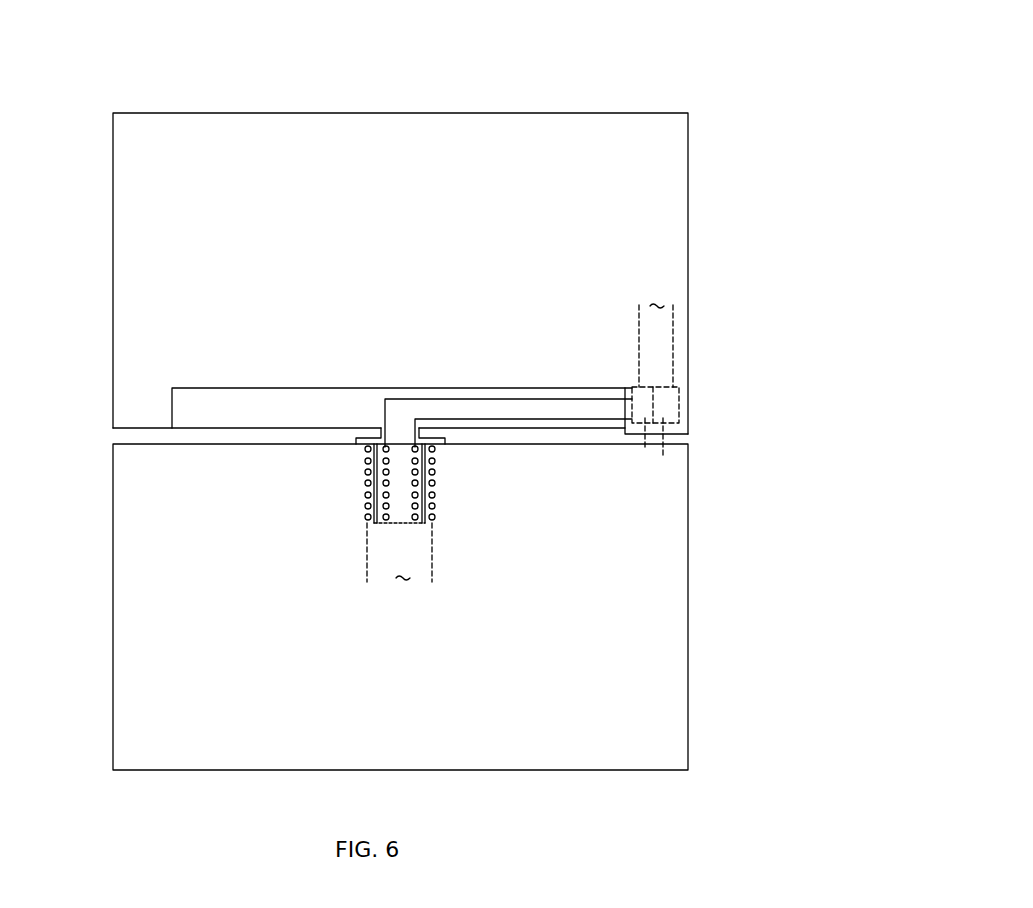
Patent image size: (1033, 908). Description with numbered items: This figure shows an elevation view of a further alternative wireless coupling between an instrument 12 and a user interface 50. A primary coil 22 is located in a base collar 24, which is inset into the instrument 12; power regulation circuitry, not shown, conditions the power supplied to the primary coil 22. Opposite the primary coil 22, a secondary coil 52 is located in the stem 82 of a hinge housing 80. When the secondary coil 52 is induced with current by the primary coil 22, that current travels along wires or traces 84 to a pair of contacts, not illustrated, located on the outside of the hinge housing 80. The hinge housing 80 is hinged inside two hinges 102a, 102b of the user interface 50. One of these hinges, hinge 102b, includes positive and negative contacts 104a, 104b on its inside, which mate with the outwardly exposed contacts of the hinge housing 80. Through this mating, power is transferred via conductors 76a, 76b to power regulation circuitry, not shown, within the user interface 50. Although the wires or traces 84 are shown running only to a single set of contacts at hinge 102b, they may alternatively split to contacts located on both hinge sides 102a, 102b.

The user interface 50 is at (722, 105).
The instrument 12 is at (700, 455).
The hinge 102a is at (127, 408).
The hinge 102b is at (680, 403).
The hinge housing 80 is at (238, 402).
The wires or traces 84 is at (482, 417).
The conductor 76a is at (638, 353).
The conductor 76b is at (675, 342).
The positive contact 104a is at (645, 447).
The negative contact 104b is at (663, 457).
The primary coil 22 is at (435, 493).
The base collar 24 is at (430, 520).
The stem 82 is at (402, 515).
The secondary coil 52 is at (415, 522).